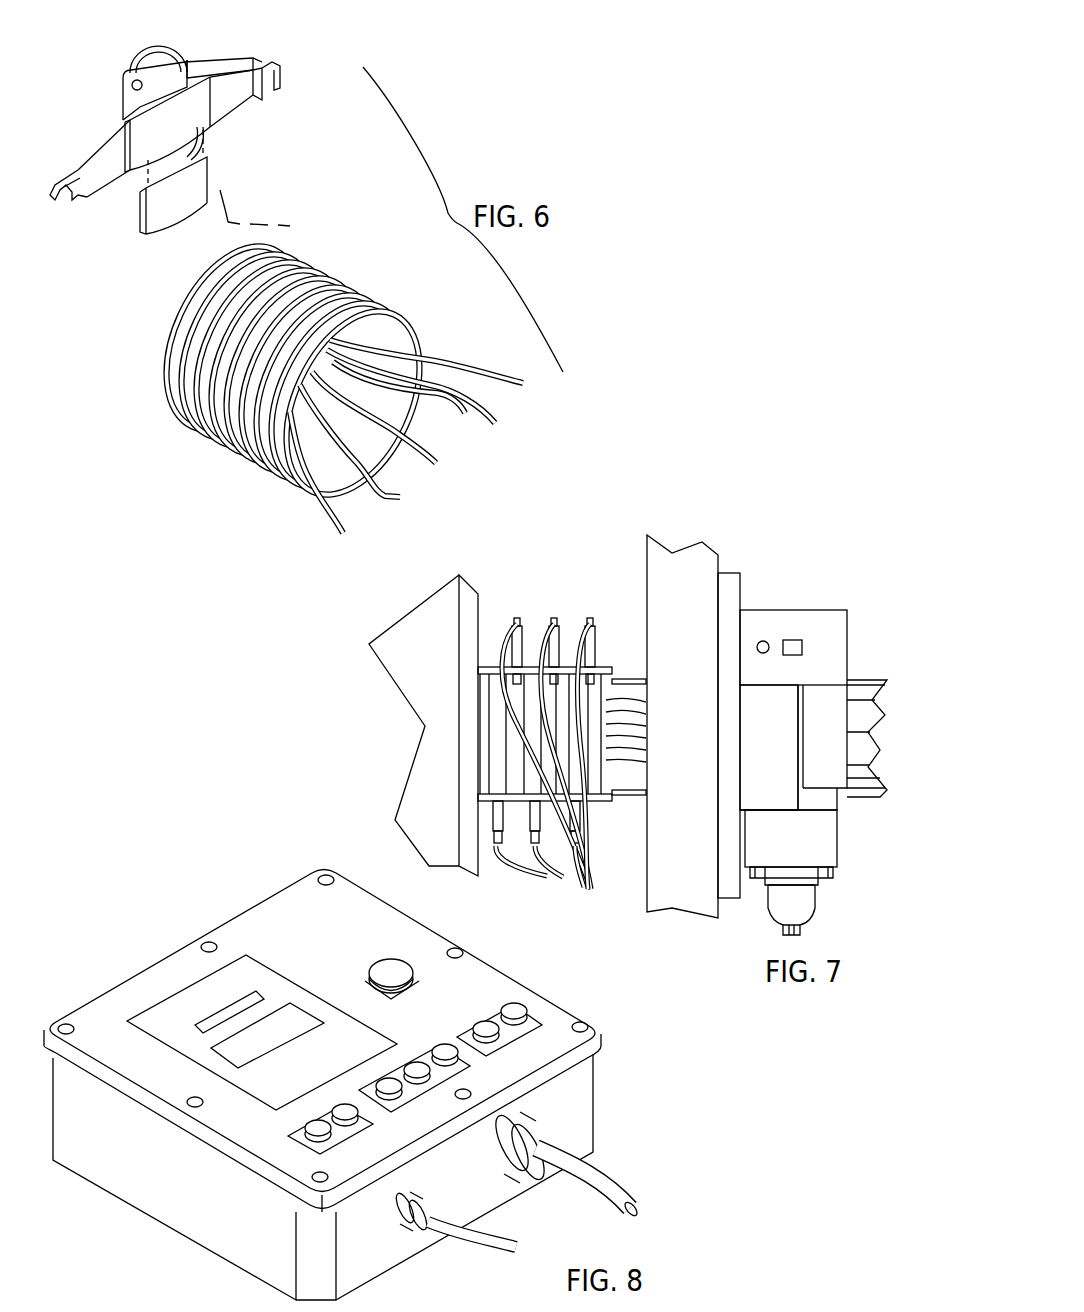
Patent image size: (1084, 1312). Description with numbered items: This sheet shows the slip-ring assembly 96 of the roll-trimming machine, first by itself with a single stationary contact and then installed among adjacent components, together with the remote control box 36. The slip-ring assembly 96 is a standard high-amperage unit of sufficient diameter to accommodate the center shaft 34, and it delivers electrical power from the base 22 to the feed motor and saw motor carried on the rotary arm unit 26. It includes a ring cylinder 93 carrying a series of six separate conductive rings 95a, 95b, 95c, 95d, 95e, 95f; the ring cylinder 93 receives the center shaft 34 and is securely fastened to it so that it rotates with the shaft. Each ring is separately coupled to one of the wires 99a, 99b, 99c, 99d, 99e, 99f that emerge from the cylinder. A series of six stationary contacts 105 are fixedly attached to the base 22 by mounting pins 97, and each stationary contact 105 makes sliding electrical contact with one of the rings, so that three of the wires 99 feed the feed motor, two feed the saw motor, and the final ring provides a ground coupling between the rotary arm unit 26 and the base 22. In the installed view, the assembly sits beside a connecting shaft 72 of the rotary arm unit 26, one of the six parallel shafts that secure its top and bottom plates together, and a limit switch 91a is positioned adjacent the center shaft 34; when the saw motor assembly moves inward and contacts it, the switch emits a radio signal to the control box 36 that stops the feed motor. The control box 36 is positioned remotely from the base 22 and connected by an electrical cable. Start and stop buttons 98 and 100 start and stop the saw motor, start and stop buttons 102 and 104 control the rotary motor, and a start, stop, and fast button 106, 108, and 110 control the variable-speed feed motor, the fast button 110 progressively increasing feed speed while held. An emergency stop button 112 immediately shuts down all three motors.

In FIG. 6, the slip-ring assembly 96 is at (324, 75).
In FIG. 6, the stationary contact 105 is at (105, 128).
In FIG. 7, the stationary contact 105 is at (554, 620).
In FIG. 6, the ring cylinder 93 is at (266, 386).
In FIG. 6, the conductive ring 95a is at (185, 404).
In FIG. 6, the conductive ring 95b is at (200, 412).
In FIG. 6, the conductive ring 95c is at (215, 422).
In FIG. 6, the conductive ring 95d is at (225, 428).
In FIG. 6, the conductive ring 95e is at (240, 436).
In FIG. 6, the conductive ring 95f is at (260, 447).
In FIG. 6, the wire 99a is at (341, 535).
In FIG. 6, the wire 99b is at (384, 500).
In FIG. 6, the wire 99c is at (435, 465).
In FIG. 6, the wire 99d is at (466, 414).
In FIG. 6, the wire 99e is at (497, 424).
In FIG. 6, the wire 99f is at (521, 385).
In FIG. 7, the wires 99 is at (645, 740).
In FIG. 7, the base 22 is at (412, 676).
In FIG. 7, the connecting shaft 72 is at (692, 555).
In FIG. 7, the rotary arm unit 26 is at (783, 580).
In FIG. 7, the limit switch 91a is at (840, 845).
In FIG. 7, the center shaft 34 is at (857, 688).
In FIG. 7, the mounting pin 97 is at (487, 667).
In FIG. 8, the control box 36 is at (167, 915).
In FIG. 8, the emergency stop button 112 is at (389, 963).
In FIG. 8, the start button 98 is at (310, 1128).
In FIG. 8, the stop button 100 is at (345, 1106).
In FIG. 8, the start button 102 is at (486, 1022).
In FIG. 8, the stop button 104 is at (516, 1004).
In FIG. 8, the start button 106 is at (444, 1046).
In FIG. 8, the stop button 108 is at (389, 1080).
In FIG. 8, the fast button 110 is at (416, 1064).